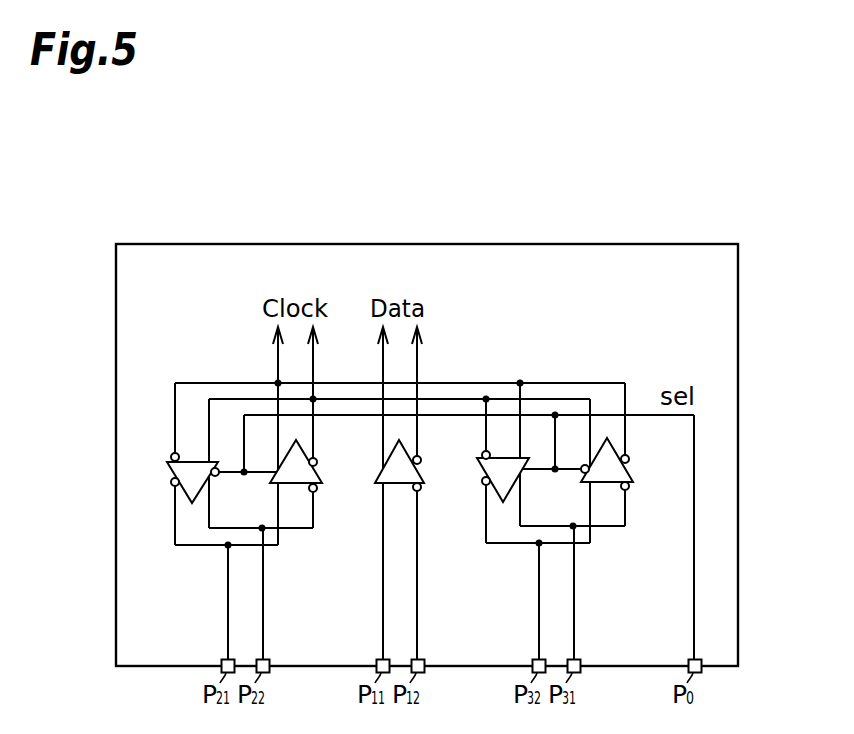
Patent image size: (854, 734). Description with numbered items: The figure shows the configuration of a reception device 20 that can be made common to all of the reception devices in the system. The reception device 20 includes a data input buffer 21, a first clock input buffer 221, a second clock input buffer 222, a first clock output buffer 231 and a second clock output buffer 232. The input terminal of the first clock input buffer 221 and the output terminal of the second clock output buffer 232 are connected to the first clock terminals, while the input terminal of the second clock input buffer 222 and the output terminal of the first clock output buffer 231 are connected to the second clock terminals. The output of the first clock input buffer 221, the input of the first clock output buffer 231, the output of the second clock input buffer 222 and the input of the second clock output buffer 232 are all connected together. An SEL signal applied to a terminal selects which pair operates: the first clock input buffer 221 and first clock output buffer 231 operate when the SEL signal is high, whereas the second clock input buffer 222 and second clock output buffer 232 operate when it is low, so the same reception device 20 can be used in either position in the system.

The reception device 20 is at (676, 244).
The data input buffer 21 is at (422, 476).
The first clock input buffer 221 is at (320, 474).
The second clock input buffer 222 is at (631, 471).
The first clock output buffer 231 is at (478, 470).
The second clock output buffer 232 is at (166, 473).